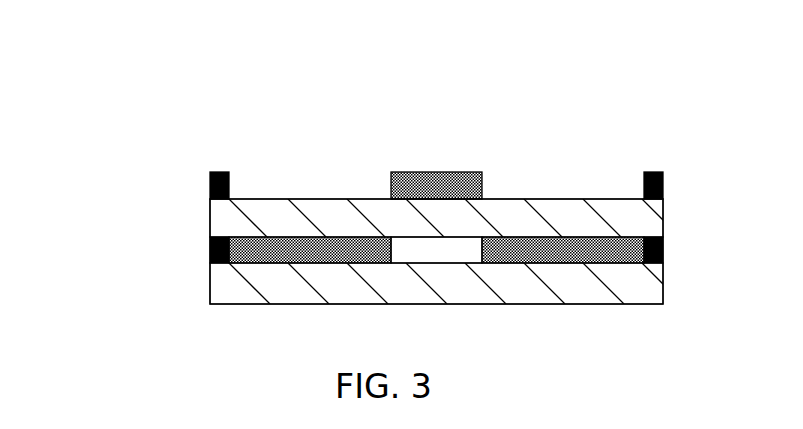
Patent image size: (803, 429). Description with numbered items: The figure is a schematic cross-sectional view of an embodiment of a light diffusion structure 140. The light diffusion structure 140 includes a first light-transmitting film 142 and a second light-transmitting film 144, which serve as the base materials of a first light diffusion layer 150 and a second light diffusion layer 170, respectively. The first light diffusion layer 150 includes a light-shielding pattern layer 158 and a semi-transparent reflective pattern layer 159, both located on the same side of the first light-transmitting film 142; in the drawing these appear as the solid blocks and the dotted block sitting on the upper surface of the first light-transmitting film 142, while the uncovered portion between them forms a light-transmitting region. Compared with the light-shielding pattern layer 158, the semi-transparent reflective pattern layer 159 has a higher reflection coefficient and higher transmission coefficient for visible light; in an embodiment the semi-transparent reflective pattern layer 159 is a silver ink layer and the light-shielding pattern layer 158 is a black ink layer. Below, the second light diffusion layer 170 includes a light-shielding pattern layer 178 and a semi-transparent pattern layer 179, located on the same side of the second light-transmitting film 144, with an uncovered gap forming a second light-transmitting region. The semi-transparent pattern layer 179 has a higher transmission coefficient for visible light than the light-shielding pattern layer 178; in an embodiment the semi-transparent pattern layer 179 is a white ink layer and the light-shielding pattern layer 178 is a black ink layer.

The light diffusion structure 140 is at (384, 163).
The first light-transmitting film 142 is at (217, 219).
The second light-transmitting film 144 is at (217, 283).
The first light diffusion layer 150 is at (354, 161).
The light-shielding pattern layer 158 is at (210, 181).
The semi-transparent reflective pattern layer 159 is at (434, 176).
The second light diffusion layer 170 is at (384, 228).
The light-shielding pattern layer 178 is at (210, 246).
The semi-transparent pattern layer 179 is at (663, 253).